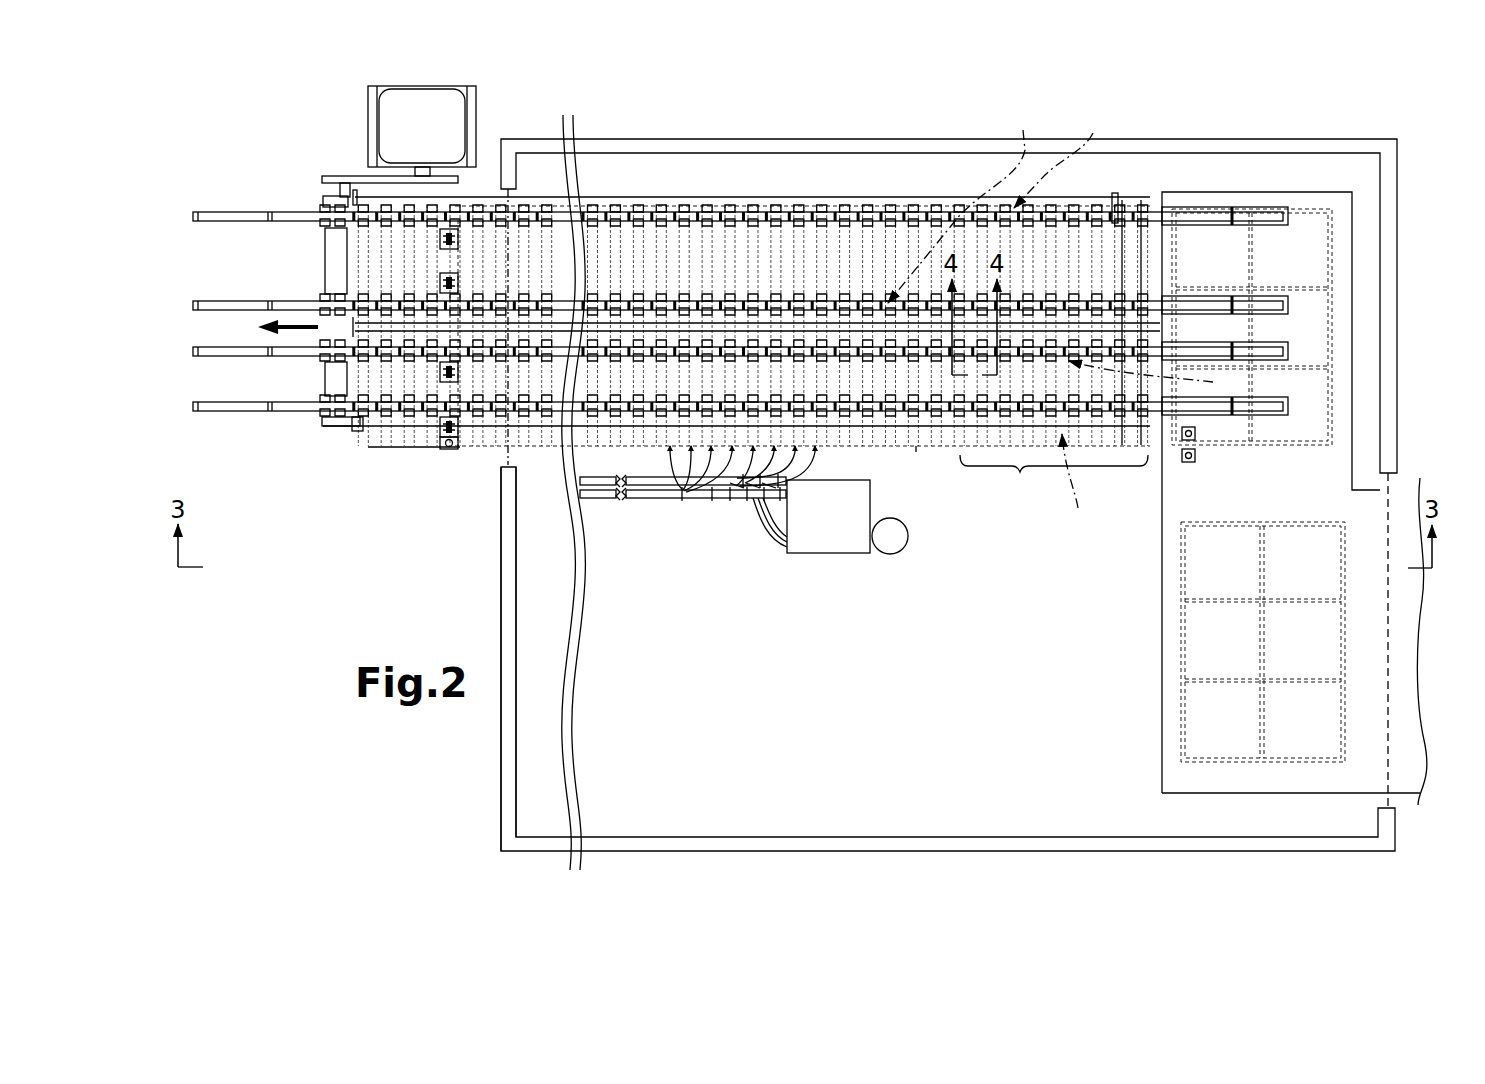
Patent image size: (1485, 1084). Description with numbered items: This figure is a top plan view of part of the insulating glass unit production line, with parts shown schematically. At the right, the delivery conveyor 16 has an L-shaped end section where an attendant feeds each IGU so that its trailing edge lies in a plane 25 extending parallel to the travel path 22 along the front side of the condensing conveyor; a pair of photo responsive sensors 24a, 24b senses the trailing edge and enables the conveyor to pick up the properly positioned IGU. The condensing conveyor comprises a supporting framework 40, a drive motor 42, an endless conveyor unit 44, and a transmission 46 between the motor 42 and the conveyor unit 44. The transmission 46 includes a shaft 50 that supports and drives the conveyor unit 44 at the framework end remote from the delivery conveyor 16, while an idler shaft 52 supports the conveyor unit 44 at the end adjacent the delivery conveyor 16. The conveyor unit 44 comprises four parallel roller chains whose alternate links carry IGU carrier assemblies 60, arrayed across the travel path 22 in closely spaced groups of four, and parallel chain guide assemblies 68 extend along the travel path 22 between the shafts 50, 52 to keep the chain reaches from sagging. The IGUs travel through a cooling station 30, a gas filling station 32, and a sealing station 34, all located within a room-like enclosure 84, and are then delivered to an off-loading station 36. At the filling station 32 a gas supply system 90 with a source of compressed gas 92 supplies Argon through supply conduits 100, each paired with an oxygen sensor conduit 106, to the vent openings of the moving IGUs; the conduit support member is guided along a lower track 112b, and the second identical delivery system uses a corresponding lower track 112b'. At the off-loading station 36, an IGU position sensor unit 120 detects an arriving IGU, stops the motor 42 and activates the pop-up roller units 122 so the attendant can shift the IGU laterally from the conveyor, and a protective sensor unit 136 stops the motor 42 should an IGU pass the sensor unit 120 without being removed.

The delivery conveyor 16 is at (1207, 555).
The travel path 22 is at (302, 324).
The sensor 24a is at (1200, 434).
The sensor 24b is at (1198, 462).
The plane 25 is at (410, 447).
The cooling station 30 is at (1054, 482).
The gas filling station 32 is at (697, 508).
The sealing station 34 is at (535, 480).
The off-loading station 36 is at (442, 452).
The supporting framework 40 is at (918, 454).
The drive motor 42 is at (403, 138).
The endless conveyor unit 44 is at (830, 216).
The transmission 46 is at (350, 172).
The shaft 50 is at (325, 378).
The idler shaft 52 is at (377, 182).
The IGU carrier assembly 60 is at (705, 227).
The chain guide assembly 68 is at (1067, 319).
The enclosure 84 is at (930, 848).
The gas supply system 90 is at (833, 556).
The source of compressed gas 92 is at (905, 548).
The Argon supply conduit 100 is at (817, 455).
The oxygen sensor conduit 106 is at (773, 554).
The lower track 112b is at (683, 521).
The lower track 112b' is at (678, 529).
The IGU position sensor unit 120 is at (463, 443).
The pop-up roller unit 122 is at (440, 239).
The protective sensor unit 136 is at (355, 432).